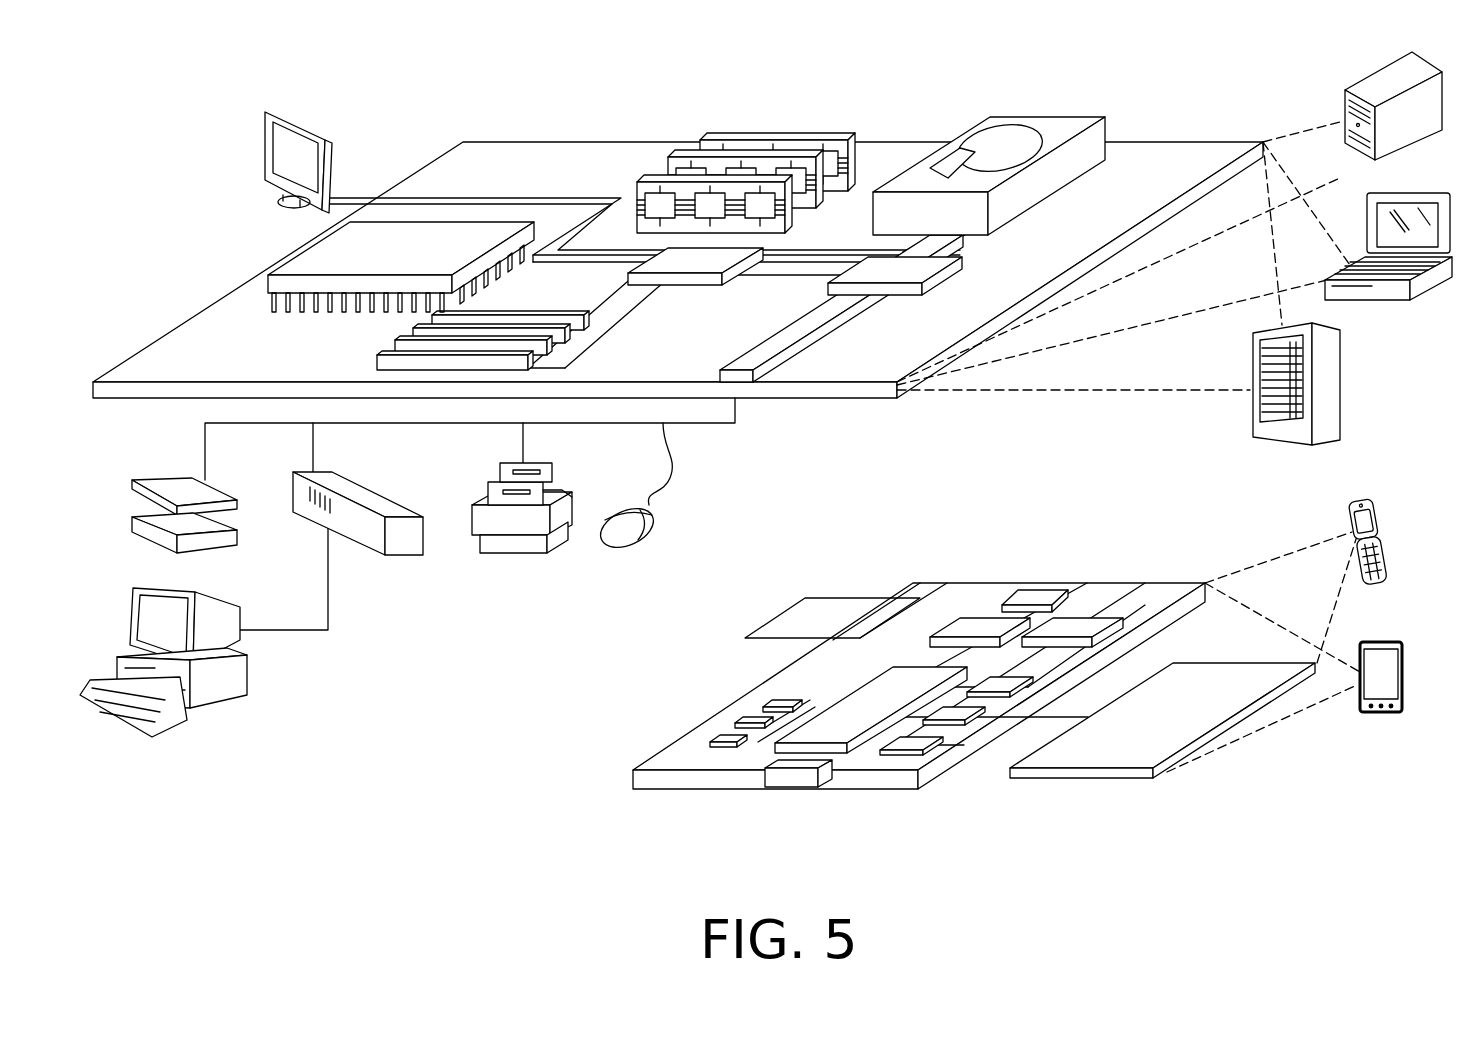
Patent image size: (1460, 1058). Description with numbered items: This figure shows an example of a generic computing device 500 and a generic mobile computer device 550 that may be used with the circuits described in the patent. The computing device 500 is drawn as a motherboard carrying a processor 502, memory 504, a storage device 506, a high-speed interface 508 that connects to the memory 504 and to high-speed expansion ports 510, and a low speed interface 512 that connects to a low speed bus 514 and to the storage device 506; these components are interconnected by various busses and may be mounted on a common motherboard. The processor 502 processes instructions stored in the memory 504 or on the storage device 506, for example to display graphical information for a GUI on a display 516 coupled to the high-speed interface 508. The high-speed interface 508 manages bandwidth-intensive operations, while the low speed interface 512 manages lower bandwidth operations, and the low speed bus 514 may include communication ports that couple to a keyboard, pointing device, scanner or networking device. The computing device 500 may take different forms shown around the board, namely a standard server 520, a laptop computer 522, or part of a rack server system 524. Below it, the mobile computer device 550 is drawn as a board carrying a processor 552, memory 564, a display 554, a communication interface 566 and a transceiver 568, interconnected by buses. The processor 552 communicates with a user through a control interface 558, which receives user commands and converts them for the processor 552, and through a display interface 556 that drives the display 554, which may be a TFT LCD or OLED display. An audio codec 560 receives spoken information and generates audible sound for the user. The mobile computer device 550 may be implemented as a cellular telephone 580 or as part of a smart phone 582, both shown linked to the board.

The computing device 500 is at (410, 84).
The processor 502 is at (297, 257).
The memory 504 is at (783, 133).
The storage device 506 is at (1035, 115).
The high-speed interface 508 is at (708, 260).
The high-speed expansion ports 510 is at (403, 340).
The low speed interface 512 is at (865, 265).
The low speed bus 514 is at (745, 368).
The display 516 is at (270, 108).
The standard server 520 is at (1368, 83).
The laptop computer 522 is at (1428, 195).
The rack server system 524 is at (1340, 385).
The mobile computer device 550 is at (1254, 782).
The processor 552 is at (840, 714).
The display 554 is at (1202, 682).
The display interface 556 is at (920, 740).
The control interface 558 is at (962, 712).
The audio codec 560 is at (1003, 680).
The memory 564 is at (740, 722).
The communication interface 566 is at (980, 620).
The transceiver 568 is at (1080, 618).
The cellular telephone 580 is at (1362, 498).
The smart phone 582 is at (1372, 642).